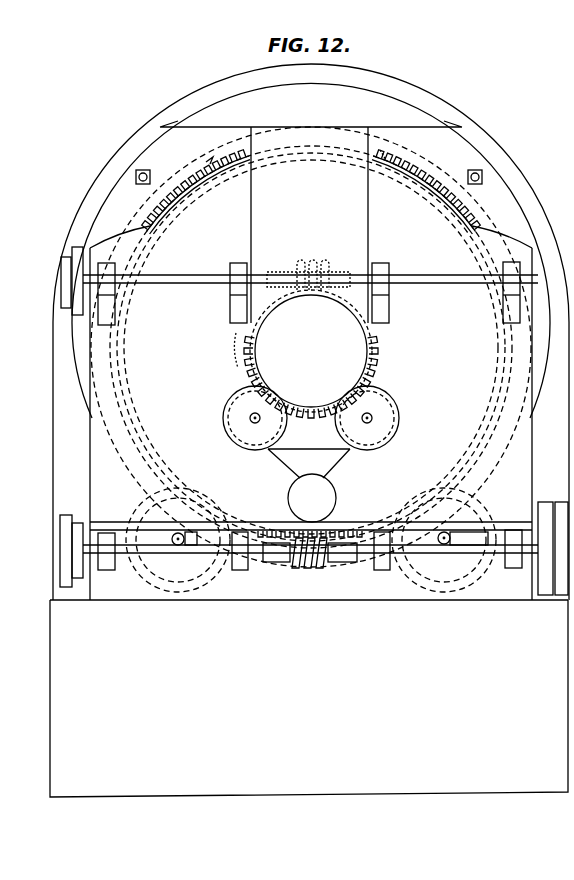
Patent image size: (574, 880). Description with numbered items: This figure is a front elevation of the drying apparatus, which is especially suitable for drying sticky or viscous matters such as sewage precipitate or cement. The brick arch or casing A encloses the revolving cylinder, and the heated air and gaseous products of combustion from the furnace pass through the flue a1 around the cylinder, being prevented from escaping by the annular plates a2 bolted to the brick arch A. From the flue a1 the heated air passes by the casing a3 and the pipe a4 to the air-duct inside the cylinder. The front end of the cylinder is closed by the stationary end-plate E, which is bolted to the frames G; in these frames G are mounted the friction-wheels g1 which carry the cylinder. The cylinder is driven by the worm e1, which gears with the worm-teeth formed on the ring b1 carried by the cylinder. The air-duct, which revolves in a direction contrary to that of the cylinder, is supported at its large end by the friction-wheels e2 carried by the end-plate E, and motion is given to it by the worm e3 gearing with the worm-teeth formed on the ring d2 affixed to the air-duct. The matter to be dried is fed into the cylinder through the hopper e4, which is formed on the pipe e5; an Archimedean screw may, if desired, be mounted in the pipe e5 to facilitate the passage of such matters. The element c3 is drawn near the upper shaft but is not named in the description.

The brick arch or casing A is at (309, 430).
The flue a1 is at (269, 164).
The annular plates a2 is at (196, 192).
The casing a3 is at (311, 110).
The pipe a4 is at (309, 225).
The ring b1 is at (410, 167).
The worm on upper shaft c3 is at (328, 262).
The ring d2 is at (381, 353).
The end-plate E is at (311, 347).
The worm e1 is at (310, 549).
The friction-wheels e2 is at (255, 418).
The worm e3 is at (367, 418).
The hopper e4 is at (309, 463).
The pipe e5 is at (312, 498).
The frames G is at (314, 550).
The friction-wheels g1 is at (311, 540).